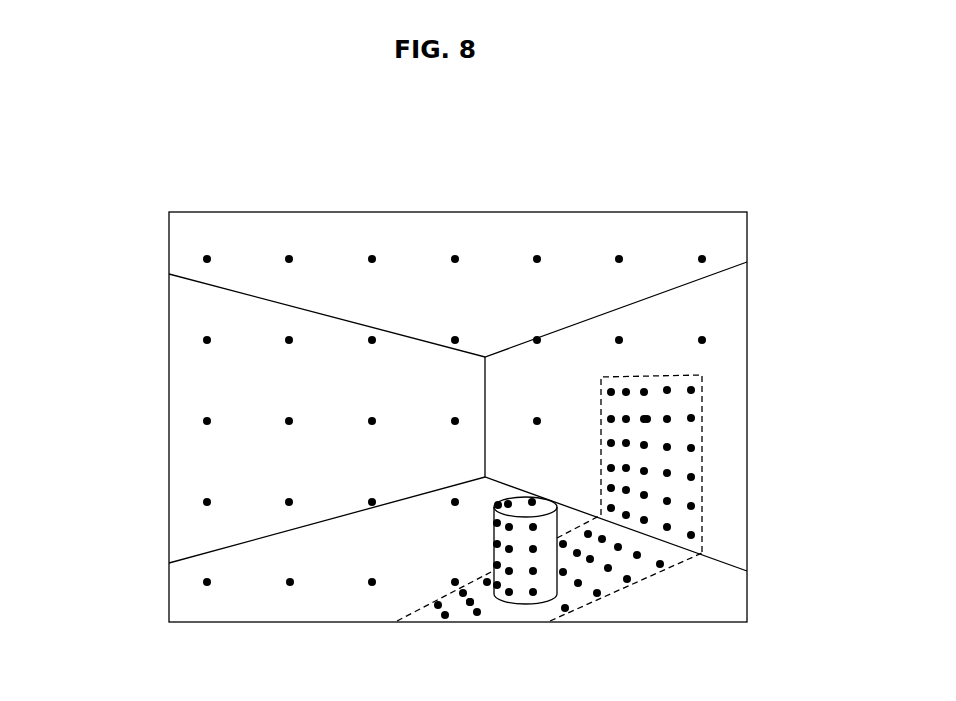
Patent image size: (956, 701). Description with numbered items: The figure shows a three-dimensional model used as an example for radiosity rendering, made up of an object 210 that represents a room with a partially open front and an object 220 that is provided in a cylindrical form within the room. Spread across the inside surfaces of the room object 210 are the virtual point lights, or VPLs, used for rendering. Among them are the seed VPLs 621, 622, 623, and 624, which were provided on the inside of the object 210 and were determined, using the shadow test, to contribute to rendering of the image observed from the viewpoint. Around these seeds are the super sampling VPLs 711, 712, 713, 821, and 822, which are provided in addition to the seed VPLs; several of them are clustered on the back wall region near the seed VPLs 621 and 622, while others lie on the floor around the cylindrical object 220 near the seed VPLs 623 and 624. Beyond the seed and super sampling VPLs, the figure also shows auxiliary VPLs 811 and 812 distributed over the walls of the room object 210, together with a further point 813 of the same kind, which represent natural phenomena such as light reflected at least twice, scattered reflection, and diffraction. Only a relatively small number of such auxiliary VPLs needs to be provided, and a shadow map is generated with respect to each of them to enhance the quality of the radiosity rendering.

The object 210 is at (187, 390).
The auxiliary VPL 811 is at (372, 256).
The auxiliary VPL 812 is at (204, 502).
The first sampling point 813 is at (290, 585).
The super sampling VPL 711 is at (627, 413).
The sampling VPL 621 is at (649, 417).
The super sampling VPL 821 is at (668, 471).
The sampling VPL 622 is at (518, 497).
The object 220 is at (552, 563).
The super sampling VPL 712 is at (495, 543).
The super sampling VPL 713 is at (468, 603).
The sampling VPL 624 is at (476, 614).
The sampling VPL 623 is at (509, 574).
The super sampling VPL 822 is at (566, 611).